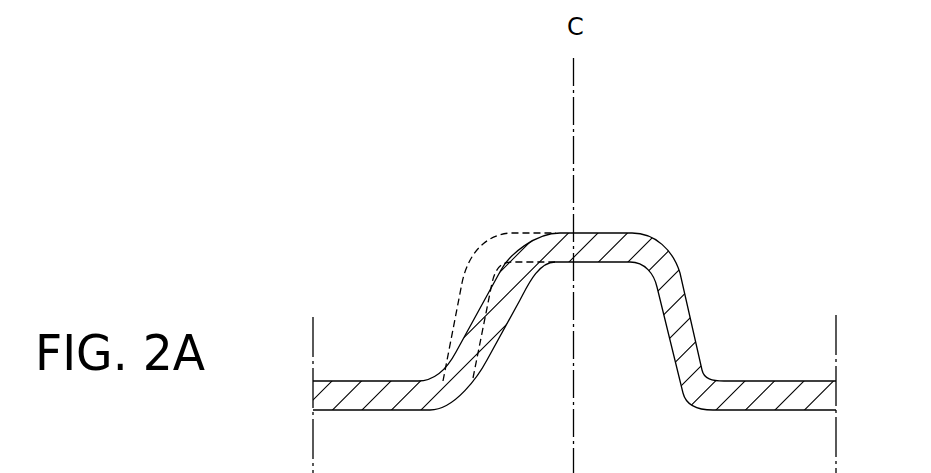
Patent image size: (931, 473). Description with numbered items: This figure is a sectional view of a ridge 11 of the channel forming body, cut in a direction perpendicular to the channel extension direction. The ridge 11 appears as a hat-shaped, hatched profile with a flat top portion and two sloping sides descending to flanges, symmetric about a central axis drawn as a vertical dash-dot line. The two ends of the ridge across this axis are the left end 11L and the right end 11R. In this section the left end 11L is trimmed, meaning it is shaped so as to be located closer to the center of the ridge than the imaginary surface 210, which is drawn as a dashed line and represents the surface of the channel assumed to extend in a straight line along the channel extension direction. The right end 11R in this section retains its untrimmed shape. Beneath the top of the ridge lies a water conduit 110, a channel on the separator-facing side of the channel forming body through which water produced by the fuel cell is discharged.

The ridge 11 is at (612, 281).
The left end of the ridge 11L is at (524, 250).
The right end of the ridge 11R is at (666, 250).
The water conduit 110 is at (612, 321).
The imaginary surface 210 is at (477, 252).